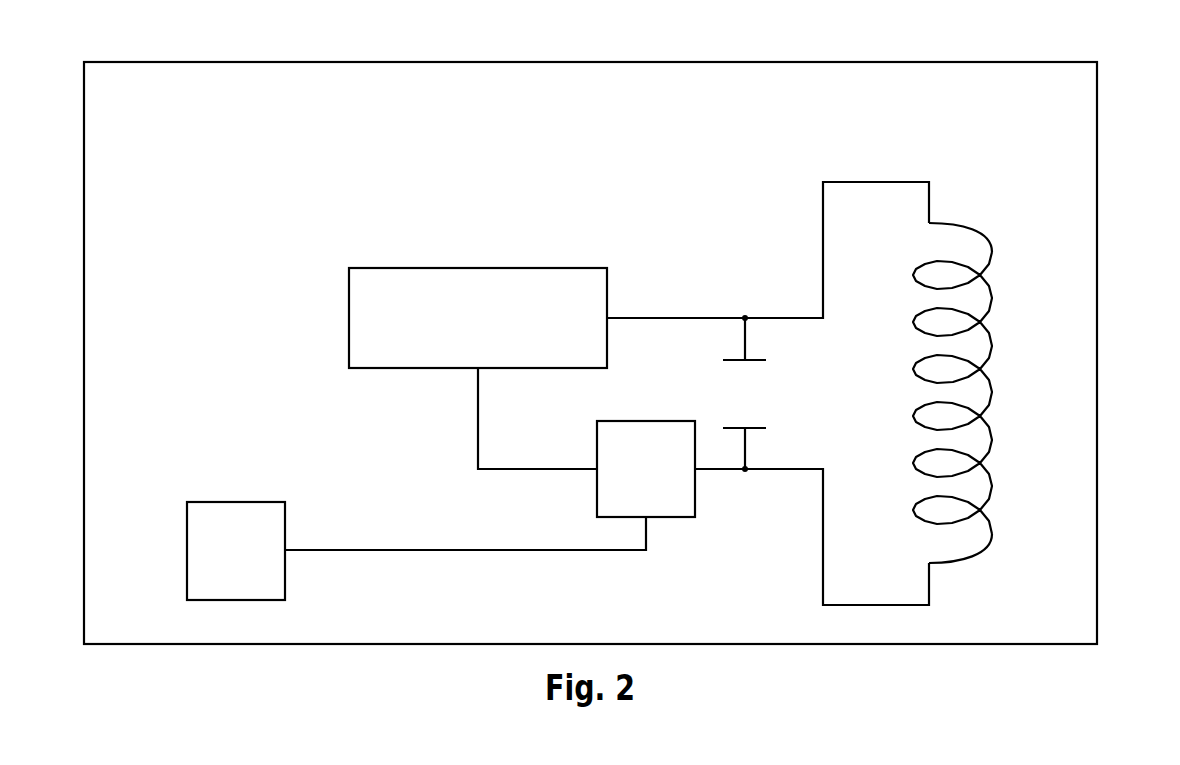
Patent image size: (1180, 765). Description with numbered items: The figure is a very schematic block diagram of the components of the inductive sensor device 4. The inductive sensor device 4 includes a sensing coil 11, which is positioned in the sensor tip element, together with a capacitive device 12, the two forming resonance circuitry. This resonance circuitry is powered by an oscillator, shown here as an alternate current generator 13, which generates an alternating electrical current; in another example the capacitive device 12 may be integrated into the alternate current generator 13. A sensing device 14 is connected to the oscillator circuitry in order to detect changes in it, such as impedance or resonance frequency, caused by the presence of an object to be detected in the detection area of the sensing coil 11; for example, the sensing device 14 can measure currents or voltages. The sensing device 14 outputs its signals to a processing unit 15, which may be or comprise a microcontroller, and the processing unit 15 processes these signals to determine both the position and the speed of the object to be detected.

The inductive sensor device 4 is at (1097, 370).
The sensing coil 11 is at (992, 253).
The capacitive device 12 is at (766, 393).
The alternate current generator 13 is at (407, 268).
The sensing device 14 is at (670, 518).
The processing unit 15 is at (237, 501).